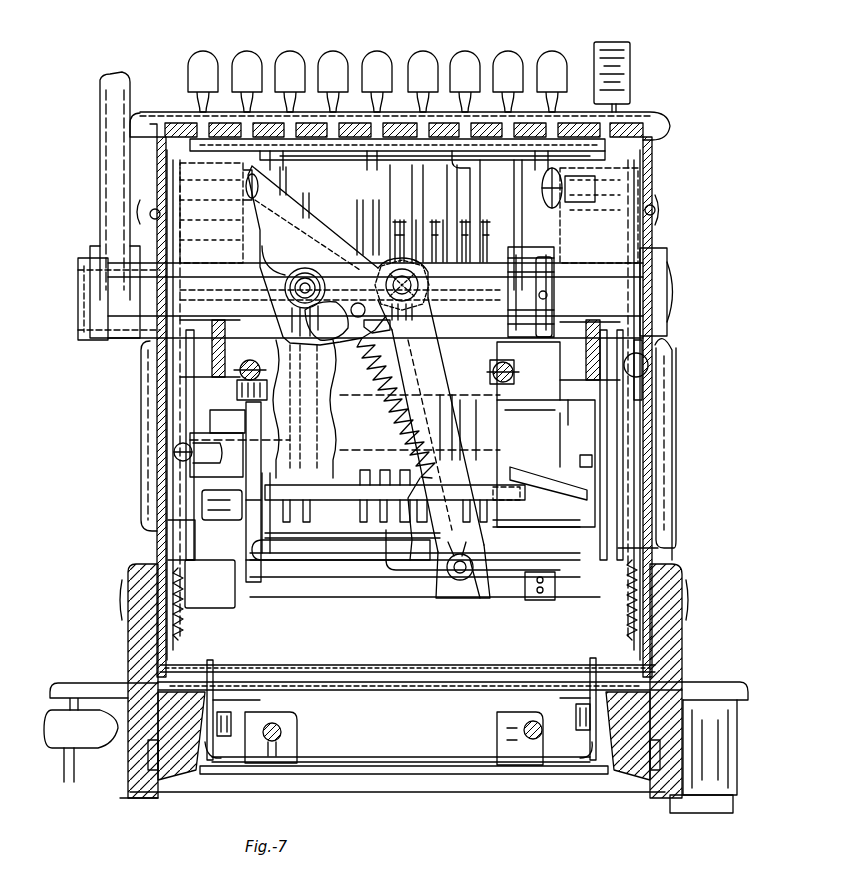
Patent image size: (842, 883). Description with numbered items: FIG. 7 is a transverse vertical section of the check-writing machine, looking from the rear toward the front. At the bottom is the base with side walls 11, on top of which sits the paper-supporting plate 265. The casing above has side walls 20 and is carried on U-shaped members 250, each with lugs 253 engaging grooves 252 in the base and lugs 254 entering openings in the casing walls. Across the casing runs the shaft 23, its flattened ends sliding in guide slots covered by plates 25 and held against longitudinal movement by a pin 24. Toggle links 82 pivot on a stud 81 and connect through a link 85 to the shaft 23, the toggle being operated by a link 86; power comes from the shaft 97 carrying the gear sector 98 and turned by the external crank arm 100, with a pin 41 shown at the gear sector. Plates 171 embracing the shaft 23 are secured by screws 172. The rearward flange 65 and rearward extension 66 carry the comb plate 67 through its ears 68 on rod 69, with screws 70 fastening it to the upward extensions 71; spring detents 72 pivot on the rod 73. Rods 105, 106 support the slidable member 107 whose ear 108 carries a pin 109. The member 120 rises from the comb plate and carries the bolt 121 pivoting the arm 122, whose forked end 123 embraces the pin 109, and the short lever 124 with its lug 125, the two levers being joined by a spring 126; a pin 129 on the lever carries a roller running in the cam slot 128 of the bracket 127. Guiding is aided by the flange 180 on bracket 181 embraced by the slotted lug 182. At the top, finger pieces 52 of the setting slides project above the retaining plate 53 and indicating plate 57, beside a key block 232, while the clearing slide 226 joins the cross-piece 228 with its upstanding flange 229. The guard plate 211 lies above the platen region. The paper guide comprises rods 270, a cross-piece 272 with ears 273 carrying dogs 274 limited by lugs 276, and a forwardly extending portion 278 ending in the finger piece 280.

The side walls 11 is at (160, 800).
The side walls 20 is at (168, 186).
The shaft 23 is at (192, 400).
The pin 24 is at (664, 360).
The plates 25 is at (668, 460).
The shaft pin 41 is at (544, 302).
The finger pieces 52 is at (430, 70).
The retaining plate 53 is at (636, 134).
The indicating plate 57 is at (176, 124).
The rearward flange 65 is at (268, 582).
The rearward extension 66 is at (505, 462).
The comb plate 67 is at (320, 428).
The ears 68 is at (268, 510).
The rod 69 is at (354, 500).
The screws 70 is at (490, 374).
The upward extensions 71 is at (254, 366).
The spring detents 72 is at (310, 520).
The rod 73 is at (378, 396).
The stud 81 is at (152, 222).
The links 82 is at (222, 246).
The link 85 is at (160, 372).
The link 86 is at (226, 318).
The shaft 97 is at (100, 326).
The gear sector 98 is at (522, 354).
The crank arm 100 is at (108, 186).
The rod 105 is at (372, 577).
The rod 106 is at (330, 560).
The member 107 is at (518, 604).
The ear 108 is at (452, 600).
The pin 109 is at (452, 582).
The member 120 is at (350, 486).
The bolt 121 is at (388, 270).
The arm 122 is at (430, 400).
The forked end 123 is at (468, 600).
The short lever 124 is at (340, 276).
The lug 125 is at (388, 328).
The spring 126 is at (362, 352).
The bracket 127 is at (318, 238).
The cam slot 128 is at (280, 276).
The pin 129 is at (325, 286).
The plates 171 is at (618, 528).
The screws 172 is at (648, 438).
The flange 180 is at (208, 594).
The bracket 181 is at (168, 545).
The slotted lug 182 is at (236, 528).
The guard plate 211 is at (308, 666).
The slide 226 is at (552, 190).
The cross-piece 228 is at (360, 146).
The flange 229 is at (508, 160).
The key block 232 is at (632, 56).
The U-shaped members 250 is at (128, 632).
The grooves 252 is at (188, 790).
The lugs 253 is at (150, 790).
The lugs 254 is at (180, 636).
The paper-supporting plate 265 is at (728, 686).
The rods 270 is at (298, 728).
The cross-piece 272 is at (420, 774).
The ears 273 is at (206, 764).
The dogs 274 is at (214, 706).
The lugs 276 is at (250, 784).
The forwardly extending portion 278 is at (330, 774).
The finger piece 280 is at (60, 758).